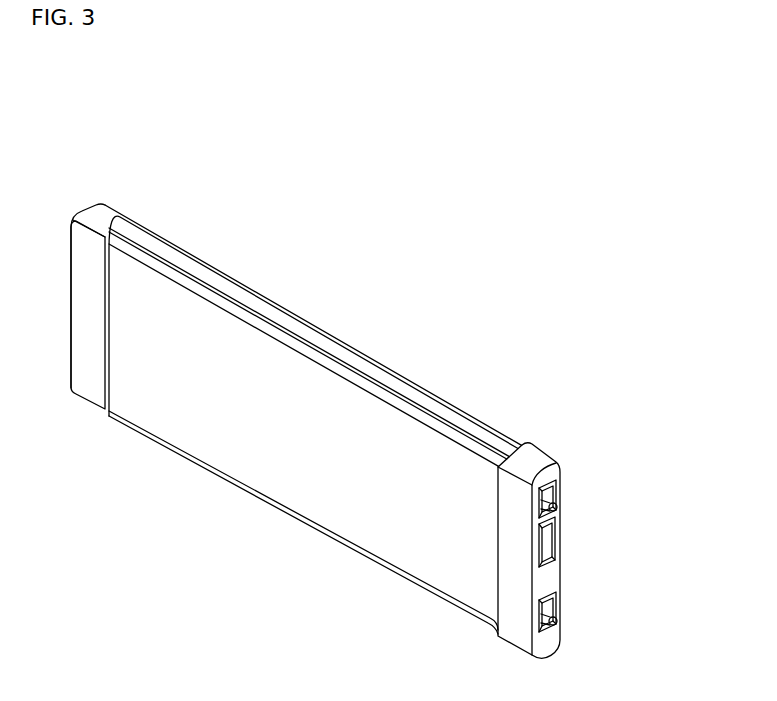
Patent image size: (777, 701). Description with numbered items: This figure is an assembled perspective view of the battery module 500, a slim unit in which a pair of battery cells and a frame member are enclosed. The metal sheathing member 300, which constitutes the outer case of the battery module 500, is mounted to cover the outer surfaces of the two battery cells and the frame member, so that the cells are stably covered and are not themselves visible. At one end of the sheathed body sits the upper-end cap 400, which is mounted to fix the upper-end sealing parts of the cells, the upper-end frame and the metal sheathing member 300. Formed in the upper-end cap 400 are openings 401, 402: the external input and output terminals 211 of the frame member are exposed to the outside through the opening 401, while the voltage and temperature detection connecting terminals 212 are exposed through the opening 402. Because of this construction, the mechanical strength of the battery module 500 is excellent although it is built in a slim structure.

The battery module 500 is at (65, 108).
The metal sheathing member 300 is at (306, 324).
The upper-end cap 400 is at (512, 591).
The opening 401 is at (554, 486).
The opening 402 is at (551, 545).
The external input and output terminals 211 is at (557, 505).
The voltage and temperature detection connecting terminals 212 is at (549, 558).